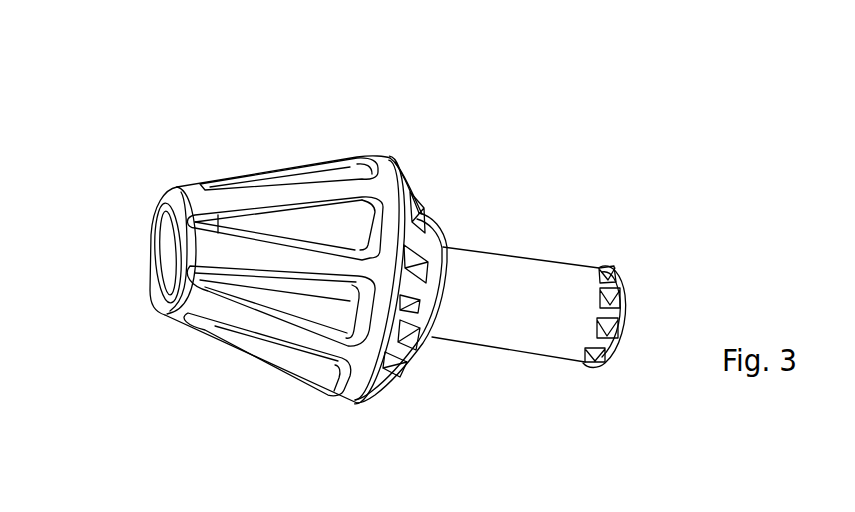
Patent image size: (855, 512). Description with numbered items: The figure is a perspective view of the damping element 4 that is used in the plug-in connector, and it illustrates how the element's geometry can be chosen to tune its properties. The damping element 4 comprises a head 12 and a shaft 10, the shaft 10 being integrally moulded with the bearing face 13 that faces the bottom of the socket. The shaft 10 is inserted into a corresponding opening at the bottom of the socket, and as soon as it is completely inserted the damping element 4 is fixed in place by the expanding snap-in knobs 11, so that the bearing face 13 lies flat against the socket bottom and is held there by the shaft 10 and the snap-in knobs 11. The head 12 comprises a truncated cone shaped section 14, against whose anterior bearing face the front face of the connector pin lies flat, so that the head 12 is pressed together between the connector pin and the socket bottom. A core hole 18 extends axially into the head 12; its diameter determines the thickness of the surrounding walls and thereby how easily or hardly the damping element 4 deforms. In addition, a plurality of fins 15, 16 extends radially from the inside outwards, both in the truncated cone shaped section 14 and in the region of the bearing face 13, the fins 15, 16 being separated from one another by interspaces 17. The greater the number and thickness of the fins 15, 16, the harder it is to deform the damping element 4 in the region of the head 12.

The damping element 4 is at (378, 108).
The shaft 10 is at (470, 265).
The snap-in knobs 11 is at (627, 332).
The head 12 is at (405, 417).
The bearing face 13 is at (434, 182).
The truncated cone shaped section 14 is at (257, 138).
The fins 15 is at (427, 337).
The fins 16 is at (157, 298).
The interspaces 17 is at (314, 168).
The core hole 18 is at (167, 243).